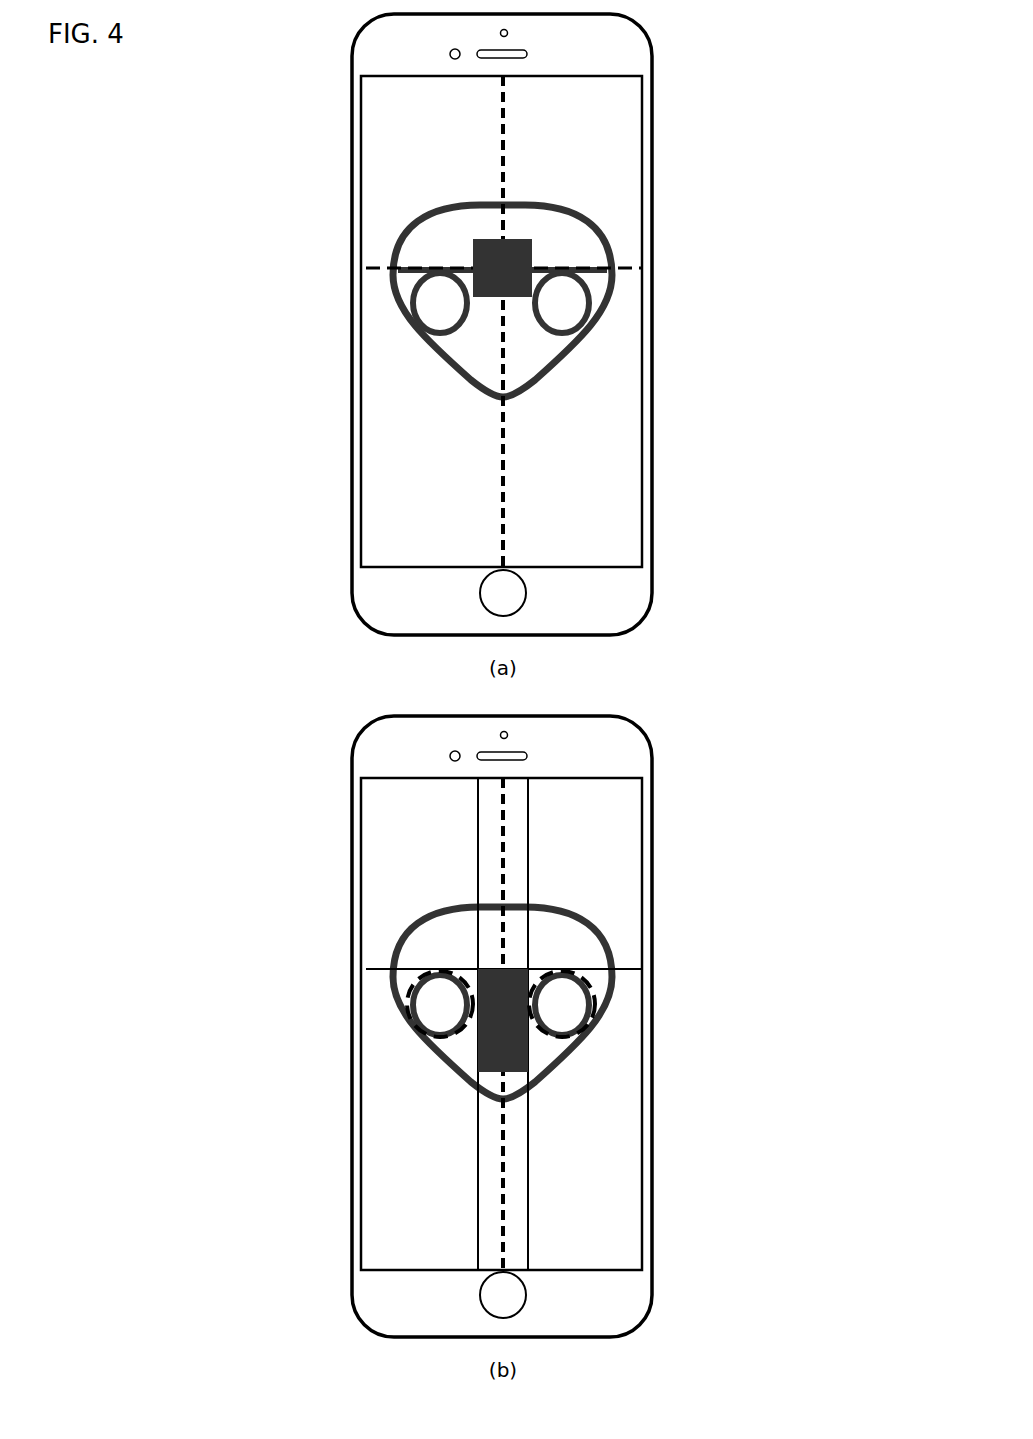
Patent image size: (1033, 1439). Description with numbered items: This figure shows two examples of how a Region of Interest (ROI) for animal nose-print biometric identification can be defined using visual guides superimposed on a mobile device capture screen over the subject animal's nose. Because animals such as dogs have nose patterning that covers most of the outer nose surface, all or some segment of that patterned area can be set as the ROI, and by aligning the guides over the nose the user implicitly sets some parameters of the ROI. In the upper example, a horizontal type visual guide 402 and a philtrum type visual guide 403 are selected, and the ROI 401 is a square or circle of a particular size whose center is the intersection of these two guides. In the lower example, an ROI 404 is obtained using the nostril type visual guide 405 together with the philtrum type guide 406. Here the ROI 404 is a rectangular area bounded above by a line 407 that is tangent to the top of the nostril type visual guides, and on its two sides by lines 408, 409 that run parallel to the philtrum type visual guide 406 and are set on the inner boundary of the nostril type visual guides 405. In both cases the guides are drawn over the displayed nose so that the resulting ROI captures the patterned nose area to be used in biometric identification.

The ROI 401 is at (532, 252).
The horizontal type visual guide 402 is at (366, 268).
The philtrum type visual guide 403 is at (500, 504).
The ROI 404 is at (533, 1052).
The nostril type visual guide 405 is at (400, 999).
The philtrum type guide 406 is at (503, 845).
The line 407 is at (375, 968).
The line 408 is at (483, 1137).
The line 409 is at (528, 1198).